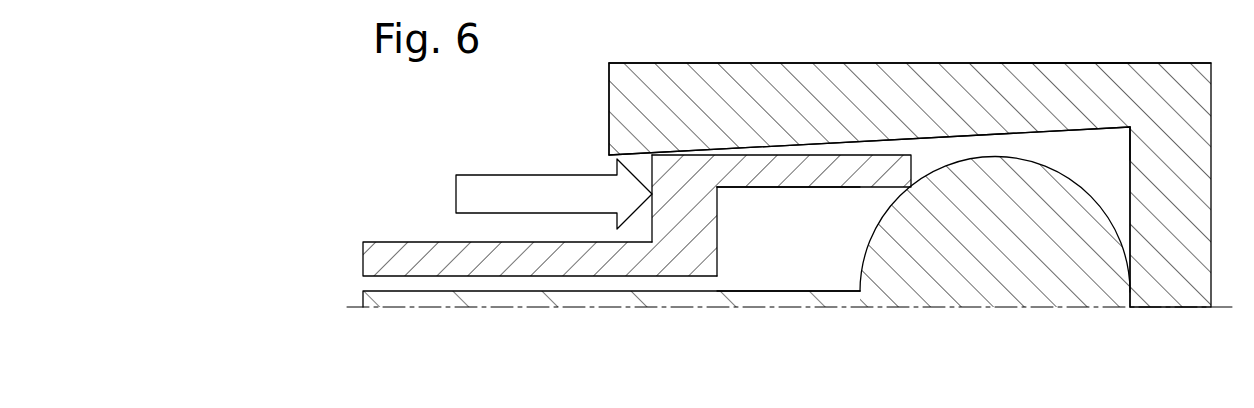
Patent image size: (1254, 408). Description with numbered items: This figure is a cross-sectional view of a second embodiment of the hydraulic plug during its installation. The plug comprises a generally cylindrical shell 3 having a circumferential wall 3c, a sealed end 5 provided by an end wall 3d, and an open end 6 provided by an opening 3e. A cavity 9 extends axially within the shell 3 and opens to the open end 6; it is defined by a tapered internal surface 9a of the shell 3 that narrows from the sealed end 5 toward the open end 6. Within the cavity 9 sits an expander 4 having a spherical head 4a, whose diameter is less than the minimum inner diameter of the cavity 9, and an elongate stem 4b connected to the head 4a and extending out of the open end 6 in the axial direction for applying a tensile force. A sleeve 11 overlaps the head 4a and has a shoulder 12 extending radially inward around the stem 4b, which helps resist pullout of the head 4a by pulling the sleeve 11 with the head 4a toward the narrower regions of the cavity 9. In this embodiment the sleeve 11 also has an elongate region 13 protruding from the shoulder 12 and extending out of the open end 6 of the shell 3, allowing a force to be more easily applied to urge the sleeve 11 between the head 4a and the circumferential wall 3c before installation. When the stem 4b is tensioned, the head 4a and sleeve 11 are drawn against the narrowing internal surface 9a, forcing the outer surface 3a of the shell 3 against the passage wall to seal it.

The shell 3 is at (853, 187).
The outer surface of the shell 3a is at (1058, 63).
The circumferential wall 3c is at (981, 103).
The end wall 3d is at (1168, 265).
The opening 3e is at (608, 107).
The expander 4 is at (746, 265).
The spherical head 4a is at (960, 273).
The elongate stem 4b is at (646, 302).
The sealed end 5 is at (1158, 238).
The open end 6 is at (552, 109).
The cavity 9 is at (778, 267).
The tapered internal surface 9a is at (878, 137).
The sleeve 11 is at (783, 178).
The shoulder 12 is at (637, 187).
The elongate region 13 is at (467, 268).